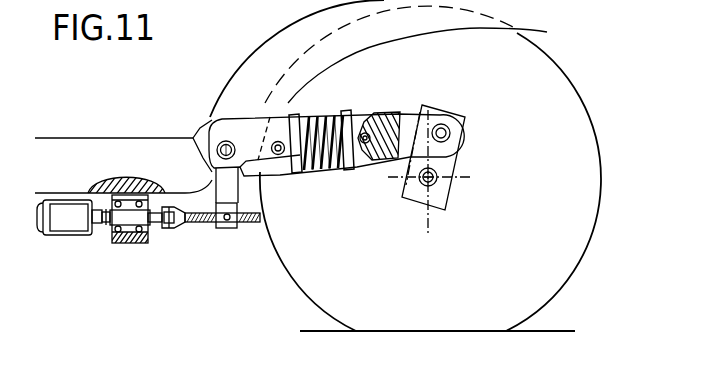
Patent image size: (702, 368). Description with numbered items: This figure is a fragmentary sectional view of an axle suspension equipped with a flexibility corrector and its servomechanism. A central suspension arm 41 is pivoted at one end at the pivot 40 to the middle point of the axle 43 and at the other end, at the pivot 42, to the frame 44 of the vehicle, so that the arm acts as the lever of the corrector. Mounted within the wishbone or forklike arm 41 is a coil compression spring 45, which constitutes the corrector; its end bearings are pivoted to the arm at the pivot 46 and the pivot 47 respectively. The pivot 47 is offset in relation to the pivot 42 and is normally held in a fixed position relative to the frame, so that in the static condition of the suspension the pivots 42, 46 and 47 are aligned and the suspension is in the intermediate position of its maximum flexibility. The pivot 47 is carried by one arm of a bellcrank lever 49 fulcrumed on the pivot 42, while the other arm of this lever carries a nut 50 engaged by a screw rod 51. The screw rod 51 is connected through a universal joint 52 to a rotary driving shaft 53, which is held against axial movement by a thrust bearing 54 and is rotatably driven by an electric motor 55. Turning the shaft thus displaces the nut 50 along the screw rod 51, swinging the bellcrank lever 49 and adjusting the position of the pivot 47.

The pivot 40 is at (447, 128).
The central suspension arm 41 is at (262, 118).
The pivot 42 is at (225, 142).
The axle 43 is at (447, 168).
The frame 44 is at (119, 140).
The coil compression spring 45 is at (336, 171).
The pivot 46 is at (363, 131).
The pivot 47 is at (279, 155).
The bellcrank lever 49 is at (193, 139).
The nut 50 is at (236, 229).
The screw rod 51 is at (203, 223).
The universal joint 52 is at (171, 229).
The rotary driving shaft 53 is at (107, 230).
The thrust bearing 54 is at (130, 244).
The electric motor 55 is at (72, 224).